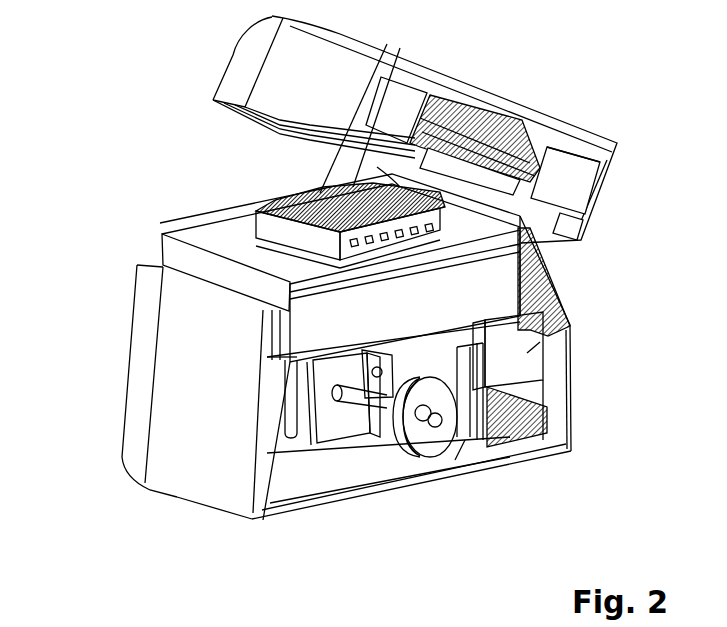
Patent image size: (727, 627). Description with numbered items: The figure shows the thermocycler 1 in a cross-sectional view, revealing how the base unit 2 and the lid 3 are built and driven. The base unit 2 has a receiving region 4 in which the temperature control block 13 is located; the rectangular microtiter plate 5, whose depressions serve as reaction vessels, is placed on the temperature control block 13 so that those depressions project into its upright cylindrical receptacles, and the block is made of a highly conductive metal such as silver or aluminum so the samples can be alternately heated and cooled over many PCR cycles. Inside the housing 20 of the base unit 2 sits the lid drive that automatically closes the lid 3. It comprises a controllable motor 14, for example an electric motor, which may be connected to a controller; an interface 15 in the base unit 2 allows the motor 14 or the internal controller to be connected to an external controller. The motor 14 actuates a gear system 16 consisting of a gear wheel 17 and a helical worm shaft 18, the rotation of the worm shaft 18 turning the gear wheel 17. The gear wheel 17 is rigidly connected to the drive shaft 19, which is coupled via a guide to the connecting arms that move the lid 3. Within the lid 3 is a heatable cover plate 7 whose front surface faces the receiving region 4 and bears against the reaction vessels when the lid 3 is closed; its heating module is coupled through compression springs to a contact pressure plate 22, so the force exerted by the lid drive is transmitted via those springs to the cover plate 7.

The thermocycler 1 is at (105, 80).
The base unit 2 is at (200, 477).
The lid 3 is at (547, 137).
The receiving region 4 is at (197, 230).
The microtiter plate 5 is at (258, 213).
The cover plate 7 is at (545, 150).
The temperature control block 13 is at (524, 235).
The motor 14 is at (560, 343).
The interface 15 is at (557, 400).
The gear system 16 is at (457, 464).
The gear wheel 17 is at (424, 447).
The helical worm shaft 18 is at (367, 450).
The drive shaft 19 is at (459, 464).
The housing 20 is at (173, 363).
The contact pressure plate 22 is at (490, 147).